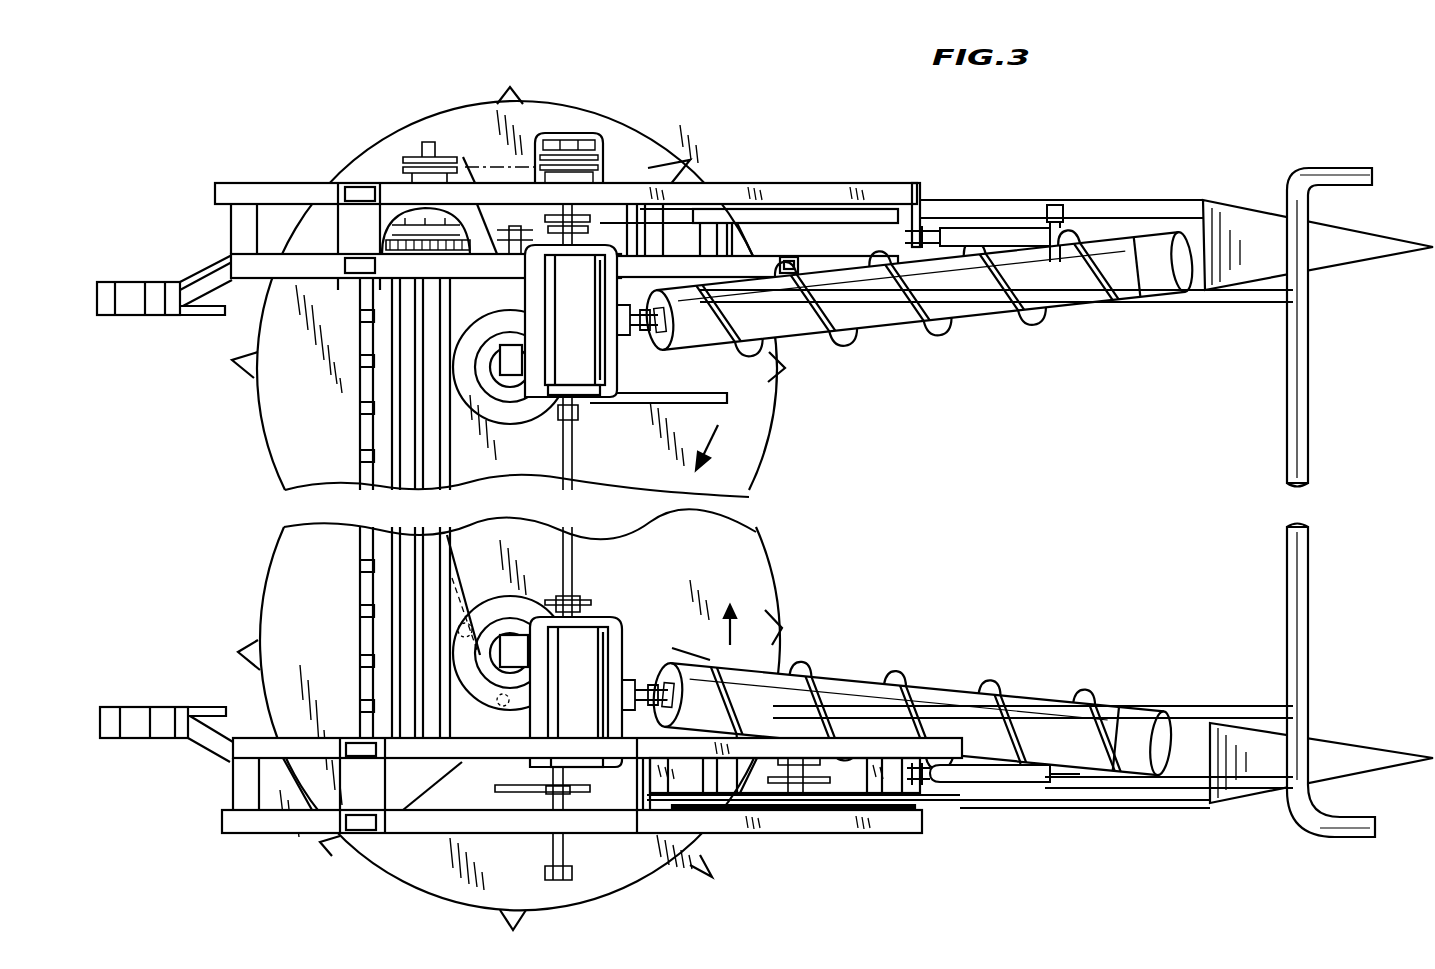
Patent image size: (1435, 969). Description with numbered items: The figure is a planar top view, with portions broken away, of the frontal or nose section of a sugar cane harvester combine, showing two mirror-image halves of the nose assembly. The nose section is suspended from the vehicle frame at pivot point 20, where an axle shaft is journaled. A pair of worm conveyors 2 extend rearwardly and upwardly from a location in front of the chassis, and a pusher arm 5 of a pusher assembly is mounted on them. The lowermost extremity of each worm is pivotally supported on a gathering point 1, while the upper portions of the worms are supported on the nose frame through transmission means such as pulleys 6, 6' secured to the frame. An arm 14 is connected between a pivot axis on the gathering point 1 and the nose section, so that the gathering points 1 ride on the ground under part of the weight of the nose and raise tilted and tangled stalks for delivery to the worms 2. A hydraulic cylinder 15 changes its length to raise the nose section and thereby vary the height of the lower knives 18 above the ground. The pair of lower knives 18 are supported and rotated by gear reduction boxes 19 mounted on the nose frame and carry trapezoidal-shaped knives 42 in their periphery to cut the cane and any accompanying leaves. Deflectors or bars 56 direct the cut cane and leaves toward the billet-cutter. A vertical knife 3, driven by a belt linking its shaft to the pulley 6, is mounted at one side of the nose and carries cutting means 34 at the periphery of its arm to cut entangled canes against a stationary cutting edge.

The gathering point member 1 is at (1353, 252).
The worm conveyor 2 is at (940, 318).
The vertical knife 3 is at (893, 800).
The pusher arm 5 is at (1310, 462).
The pulley 6 is at (581, 703).
The pulley 6' is at (591, 367).
The arm 14 is at (964, 216).
The hydraulic cylinder 15 is at (1045, 228).
The lower knife 18 is at (292, 446).
The gear reduction box 19 is at (512, 375).
The pivot point 20 is at (106, 314).
The cutting means 34 is at (975, 800).
The trapezoidal-shaped knife 42 is at (240, 372).
The deflector bar 56 is at (727, 398).